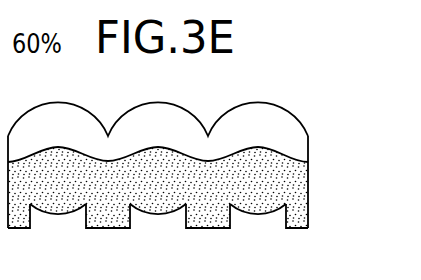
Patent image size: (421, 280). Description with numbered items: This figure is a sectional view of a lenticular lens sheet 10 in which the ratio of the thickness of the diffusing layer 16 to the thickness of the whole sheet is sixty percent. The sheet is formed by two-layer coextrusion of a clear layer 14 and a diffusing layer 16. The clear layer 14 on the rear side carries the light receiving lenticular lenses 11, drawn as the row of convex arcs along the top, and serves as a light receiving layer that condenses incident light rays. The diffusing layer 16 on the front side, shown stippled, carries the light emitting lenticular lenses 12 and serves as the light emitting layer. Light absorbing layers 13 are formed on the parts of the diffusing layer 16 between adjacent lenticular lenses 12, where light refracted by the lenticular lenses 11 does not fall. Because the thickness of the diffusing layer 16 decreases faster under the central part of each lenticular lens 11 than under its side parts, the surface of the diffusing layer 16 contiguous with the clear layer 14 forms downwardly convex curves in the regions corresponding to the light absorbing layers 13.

The lenticular lens sheet 10 is at (188, 174).
The light receiving lenticular lenses 11 is at (81, 113).
The light emitting lenticular lenses 12 is at (55, 216).
The light absorbing layers 13 is at (103, 229).
The clear layer 14 is at (168, 153).
The diffusing layer 16 is at (155, 148).